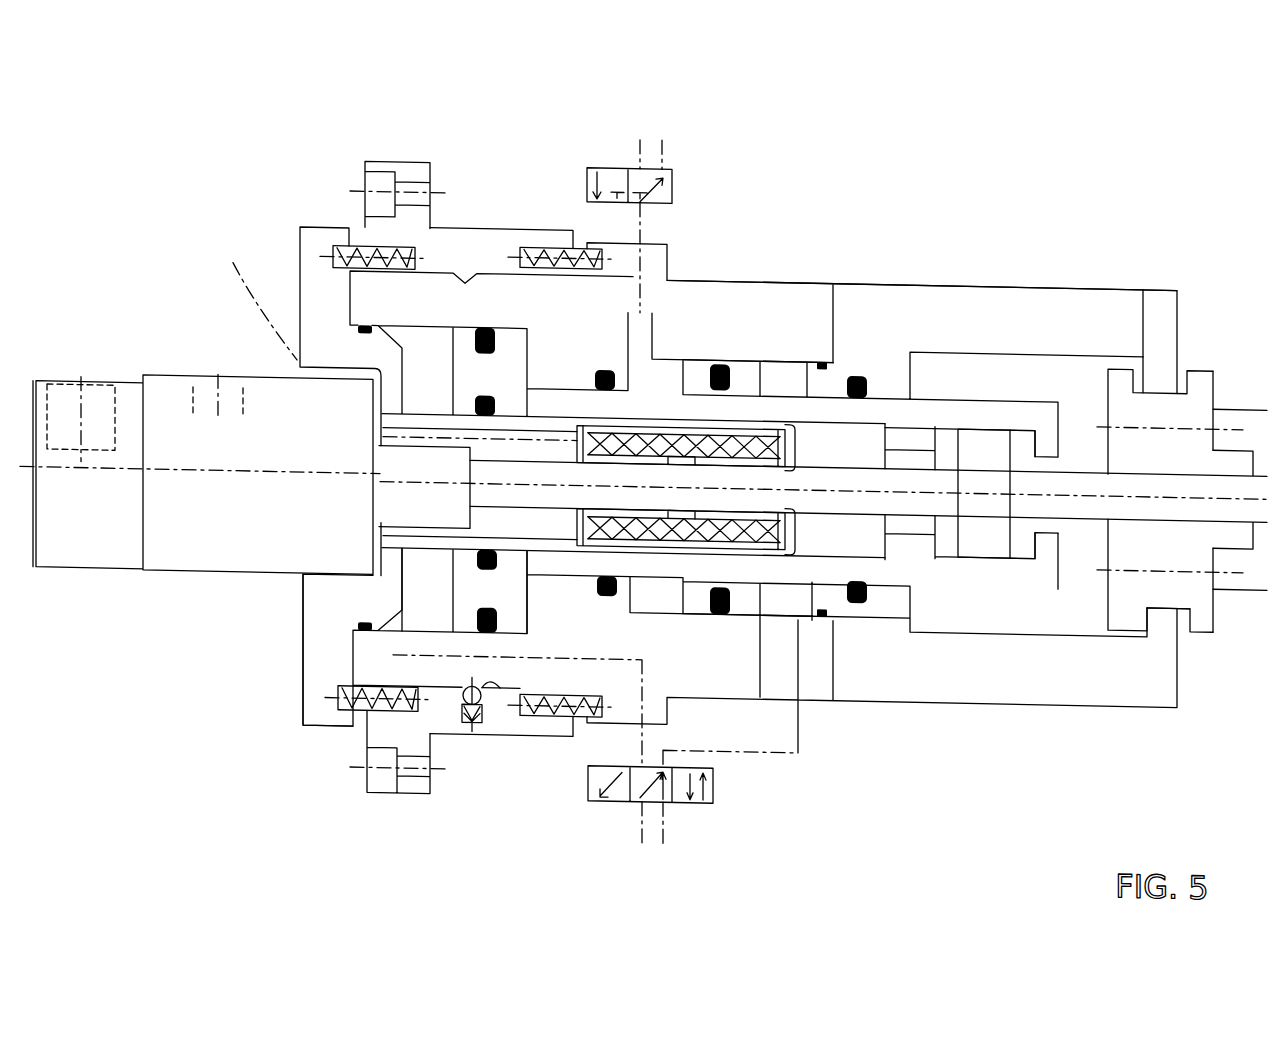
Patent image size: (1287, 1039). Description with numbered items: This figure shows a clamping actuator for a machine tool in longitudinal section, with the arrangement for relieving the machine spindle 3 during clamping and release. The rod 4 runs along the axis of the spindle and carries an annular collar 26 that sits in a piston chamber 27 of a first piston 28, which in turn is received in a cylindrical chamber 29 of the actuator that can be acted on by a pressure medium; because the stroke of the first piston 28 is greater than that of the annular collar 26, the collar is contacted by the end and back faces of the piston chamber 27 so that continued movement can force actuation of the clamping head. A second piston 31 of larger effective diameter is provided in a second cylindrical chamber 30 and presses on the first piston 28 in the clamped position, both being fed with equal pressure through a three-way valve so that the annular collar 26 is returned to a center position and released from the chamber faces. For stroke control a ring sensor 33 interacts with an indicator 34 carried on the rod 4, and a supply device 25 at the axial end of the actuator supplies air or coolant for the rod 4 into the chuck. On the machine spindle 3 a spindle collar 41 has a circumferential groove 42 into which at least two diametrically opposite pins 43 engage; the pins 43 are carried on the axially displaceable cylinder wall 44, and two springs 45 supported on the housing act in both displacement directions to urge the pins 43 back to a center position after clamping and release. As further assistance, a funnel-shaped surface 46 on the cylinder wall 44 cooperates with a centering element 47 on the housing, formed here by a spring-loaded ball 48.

The machine spindle 3 is at (1245, 393).
The rod 4 is at (1207, 493).
The supply device 25 is at (230, 535).
The annular collar 26 is at (990, 522).
The piston chamber 27 is at (1023, 422).
The first piston 28 is at (750, 588).
The cylindrical chamber 29 is at (790, 582).
The second cylindrical chamber 30 is at (418, 589).
The second piston 31 is at (513, 607).
The ring sensor 33 is at (773, 434).
The indicator 34 is at (690, 441).
The spindle collar 41 is at (1202, 363).
The circumferential groove 42 is at (1173, 350).
The pins 43 is at (1158, 607).
The cylinder wall 44 is at (907, 279).
The springs 45 is at (357, 253).
The funnel-shaped surface 46 is at (477, 678).
The centering element 47 is at (480, 717).
The spring-loaded ball 48 is at (460, 681).